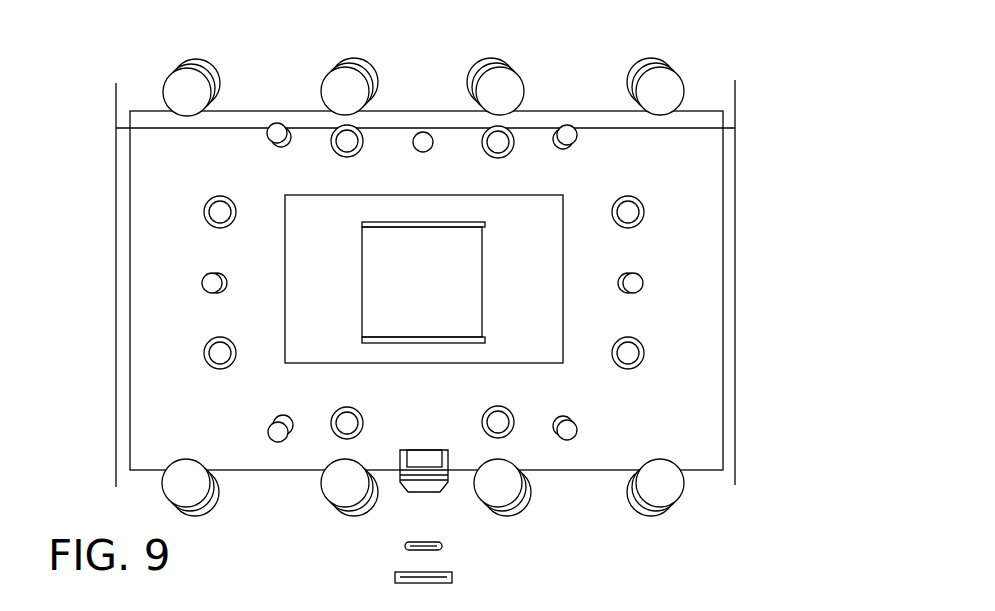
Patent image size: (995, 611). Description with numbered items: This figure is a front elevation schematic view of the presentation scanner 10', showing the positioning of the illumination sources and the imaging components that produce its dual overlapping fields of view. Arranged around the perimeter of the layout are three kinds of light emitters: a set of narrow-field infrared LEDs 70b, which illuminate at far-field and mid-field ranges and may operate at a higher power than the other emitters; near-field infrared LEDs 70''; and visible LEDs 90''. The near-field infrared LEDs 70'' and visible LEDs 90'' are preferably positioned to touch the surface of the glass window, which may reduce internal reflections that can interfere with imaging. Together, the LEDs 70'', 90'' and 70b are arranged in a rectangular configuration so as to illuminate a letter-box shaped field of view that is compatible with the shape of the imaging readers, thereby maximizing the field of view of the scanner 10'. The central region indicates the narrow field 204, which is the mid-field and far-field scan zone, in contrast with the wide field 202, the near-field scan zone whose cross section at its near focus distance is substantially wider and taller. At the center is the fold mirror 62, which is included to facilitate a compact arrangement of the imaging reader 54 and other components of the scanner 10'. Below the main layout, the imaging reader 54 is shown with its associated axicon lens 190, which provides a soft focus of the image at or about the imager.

The presentation scanner 10' is at (67, 67).
The narrow-field infrared LEDs 70b is at (173, 82).
The near-field infrared LEDs 70'' is at (432, 252).
The visible LEDs 90'' is at (429, 285).
The narrow field 204 is at (463, 184).
The fold mirror 62 is at (410, 288).
The axicon lens 190 is at (408, 490).
The imaging reader 54 is at (452, 452).
The wide field 202 is at (705, 482).